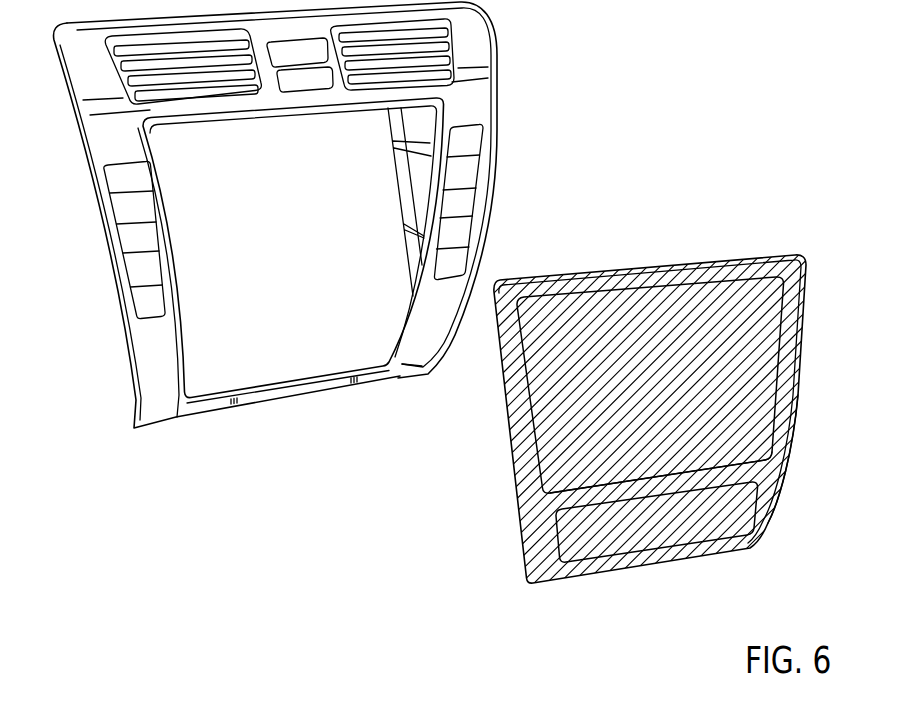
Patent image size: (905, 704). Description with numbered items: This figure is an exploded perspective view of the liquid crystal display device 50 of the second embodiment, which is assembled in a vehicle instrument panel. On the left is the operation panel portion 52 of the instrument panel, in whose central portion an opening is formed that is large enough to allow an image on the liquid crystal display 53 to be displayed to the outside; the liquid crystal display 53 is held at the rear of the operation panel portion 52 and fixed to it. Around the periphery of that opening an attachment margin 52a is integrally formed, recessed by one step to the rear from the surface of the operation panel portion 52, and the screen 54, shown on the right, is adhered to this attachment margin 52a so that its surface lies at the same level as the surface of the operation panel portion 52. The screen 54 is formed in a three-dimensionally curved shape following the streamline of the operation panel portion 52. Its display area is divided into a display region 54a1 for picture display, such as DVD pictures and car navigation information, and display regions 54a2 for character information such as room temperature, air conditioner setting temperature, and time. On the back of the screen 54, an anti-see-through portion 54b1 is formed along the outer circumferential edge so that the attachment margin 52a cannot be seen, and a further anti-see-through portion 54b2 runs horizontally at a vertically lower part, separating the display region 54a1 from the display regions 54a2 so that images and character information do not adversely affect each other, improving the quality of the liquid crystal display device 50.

The liquid crystal display device 50 is at (302, 251).
The operation panel portion 52 is at (302, 232).
The attachment margin 52a is at (371, 380).
The liquid crystal display 53 is at (283, 348).
The screen 54 is at (452, 352).
The display region for picture display 54a1 is at (637, 333).
The display region for character information display 54a2 is at (630, 538).
The anti-see-through portion 54b1 is at (791, 381).
The anti-see-through portion in the horizontal direction 54b2 is at (677, 483).